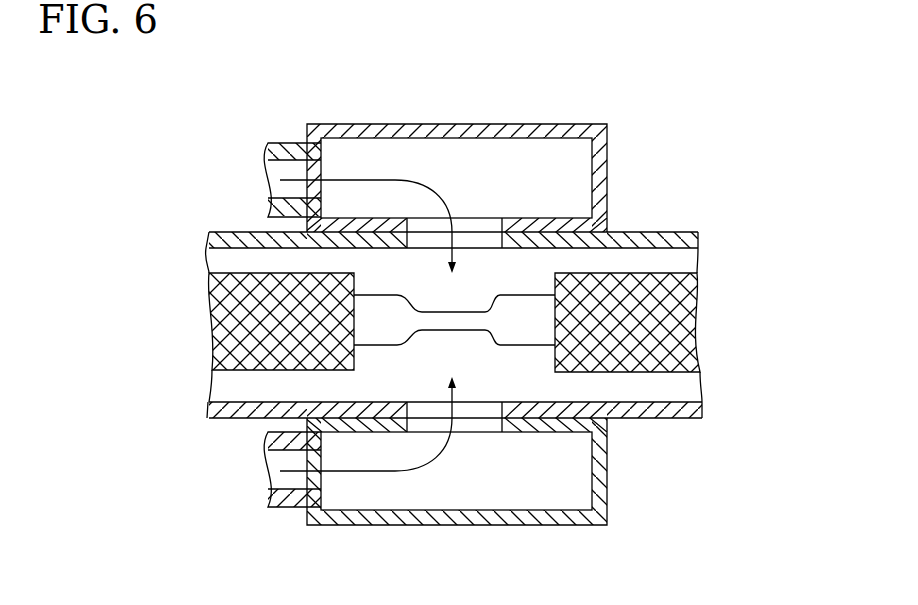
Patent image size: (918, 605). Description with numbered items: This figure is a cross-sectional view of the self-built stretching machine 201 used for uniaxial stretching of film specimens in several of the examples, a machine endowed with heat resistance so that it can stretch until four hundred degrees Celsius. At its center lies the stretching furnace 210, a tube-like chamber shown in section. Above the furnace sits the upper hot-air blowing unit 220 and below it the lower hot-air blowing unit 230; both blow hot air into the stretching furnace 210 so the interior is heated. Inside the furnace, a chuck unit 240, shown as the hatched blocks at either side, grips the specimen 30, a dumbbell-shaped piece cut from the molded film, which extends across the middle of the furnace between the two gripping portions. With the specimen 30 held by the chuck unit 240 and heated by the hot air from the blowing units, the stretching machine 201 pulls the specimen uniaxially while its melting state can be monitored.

The stretching machine 201 is at (484, 69).
The stretching furnace 210 is at (657, 232).
The upper hot-air blowing unit 220 is at (412, 124).
The lower hot-air blowing unit 230 is at (455, 525).
The chuck unit 240 is at (258, 316).
The specimen 30 is at (468, 322).